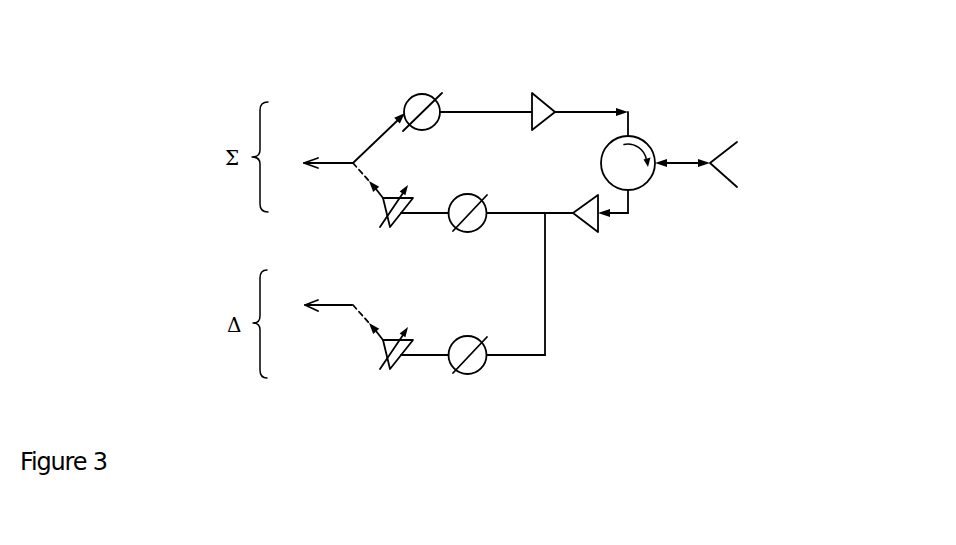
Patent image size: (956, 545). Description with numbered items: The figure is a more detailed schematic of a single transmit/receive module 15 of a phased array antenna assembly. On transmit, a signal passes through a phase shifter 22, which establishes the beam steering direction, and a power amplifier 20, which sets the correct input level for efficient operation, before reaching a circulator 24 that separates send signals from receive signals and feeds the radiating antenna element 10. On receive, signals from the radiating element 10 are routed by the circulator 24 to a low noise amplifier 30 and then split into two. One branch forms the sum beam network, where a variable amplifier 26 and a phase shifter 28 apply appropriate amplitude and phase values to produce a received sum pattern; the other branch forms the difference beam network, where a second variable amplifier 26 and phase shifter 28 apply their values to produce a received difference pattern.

The module 15 is at (320, 66).
The phase shifter 22 is at (413, 95).
The power amplifier 20 is at (539, 93).
The circulator 24 is at (643, 138).
The radiating antenna element 10 is at (725, 150).
The low noise amplifier 30 is at (598, 226).
The phase shifter 28 is at (448, 412).
The variable amplifier 26 is at (340, 377).